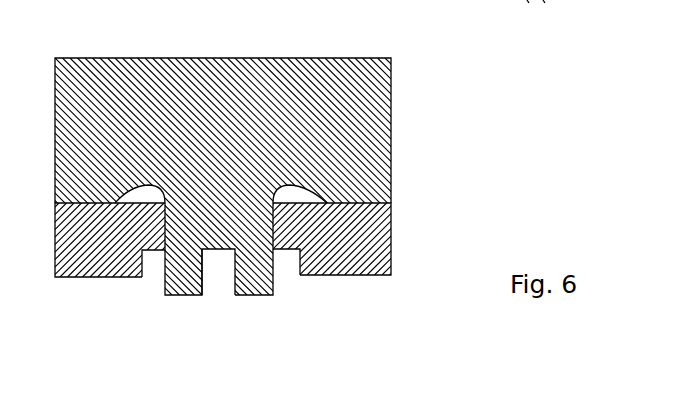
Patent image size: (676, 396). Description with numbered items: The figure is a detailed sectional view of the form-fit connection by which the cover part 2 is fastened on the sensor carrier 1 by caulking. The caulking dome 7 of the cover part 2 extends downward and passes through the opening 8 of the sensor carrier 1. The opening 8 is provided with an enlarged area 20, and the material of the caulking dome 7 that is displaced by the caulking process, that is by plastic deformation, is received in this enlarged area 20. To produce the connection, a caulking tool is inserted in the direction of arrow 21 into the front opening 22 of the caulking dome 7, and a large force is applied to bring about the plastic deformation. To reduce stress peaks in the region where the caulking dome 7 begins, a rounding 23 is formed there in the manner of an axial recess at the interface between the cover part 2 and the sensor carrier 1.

The sensor carrier 1 is at (90, 276).
The cover part 2 is at (325, 87).
The caulking dome 7 is at (257, 289).
The opening 8 is at (147, 253).
The enlarged area 20 is at (289, 257).
The arrow 21 is at (223, 281).
The front opening 22 is at (214, 286).
The rounding 23 is at (143, 185).